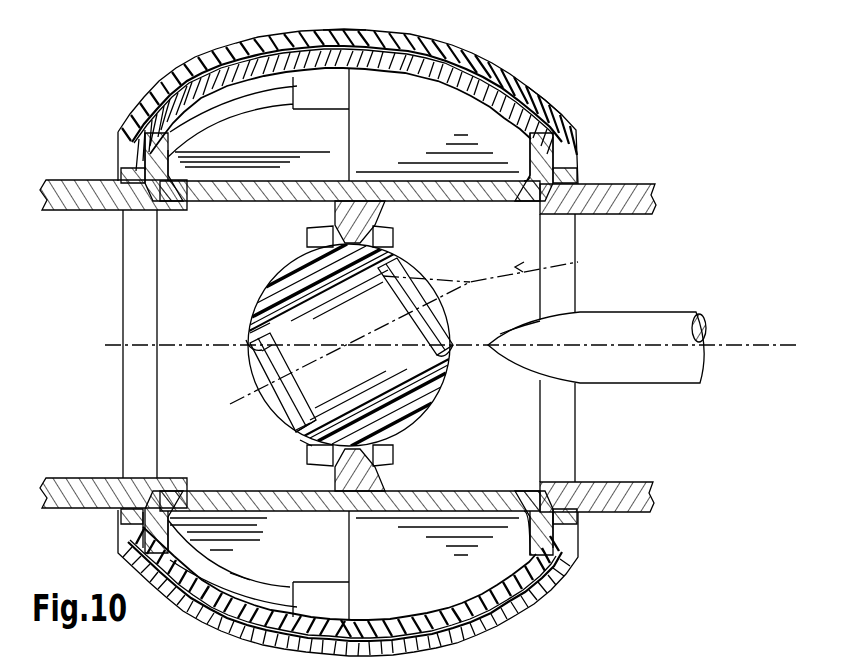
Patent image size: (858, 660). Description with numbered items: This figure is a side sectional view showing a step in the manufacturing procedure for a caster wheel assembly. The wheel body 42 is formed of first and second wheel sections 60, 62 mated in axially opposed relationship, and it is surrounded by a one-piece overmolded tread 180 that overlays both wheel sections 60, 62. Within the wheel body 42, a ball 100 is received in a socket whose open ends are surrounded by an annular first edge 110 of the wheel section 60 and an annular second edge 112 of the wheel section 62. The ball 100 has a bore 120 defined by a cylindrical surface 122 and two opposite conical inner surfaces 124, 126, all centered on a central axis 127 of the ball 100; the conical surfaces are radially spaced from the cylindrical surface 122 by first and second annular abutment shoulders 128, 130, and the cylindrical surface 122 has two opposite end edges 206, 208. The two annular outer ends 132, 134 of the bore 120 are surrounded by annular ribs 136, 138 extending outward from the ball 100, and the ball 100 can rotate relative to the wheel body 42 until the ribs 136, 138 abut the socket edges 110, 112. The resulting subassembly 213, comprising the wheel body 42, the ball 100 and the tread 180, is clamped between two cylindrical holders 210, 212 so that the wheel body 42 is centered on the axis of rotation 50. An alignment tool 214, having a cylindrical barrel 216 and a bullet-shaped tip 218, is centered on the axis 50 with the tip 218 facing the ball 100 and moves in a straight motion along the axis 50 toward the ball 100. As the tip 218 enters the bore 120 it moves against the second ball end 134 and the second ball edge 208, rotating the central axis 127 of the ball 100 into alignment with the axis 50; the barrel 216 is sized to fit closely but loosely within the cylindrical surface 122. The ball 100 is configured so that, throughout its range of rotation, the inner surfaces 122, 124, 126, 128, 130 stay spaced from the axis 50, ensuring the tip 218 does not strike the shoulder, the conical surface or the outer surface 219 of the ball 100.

The wheel body 42 is at (483, 62).
The axis of rotation 50 is at (764, 344).
The first wheel section 60 is at (312, 32).
The second wheel section 62 is at (419, 47).
The ball 100 is at (290, 273).
The first edge 110 is at (302, 462).
The second edge 112 is at (395, 262).
The bore 120 is at (276, 376).
The cylindrical surface 122 is at (300, 400).
The conical inner surface 124 is at (251, 338).
The conical inner surface 126 is at (463, 262).
The central axis 127 is at (426, 325).
The first annular abutment shoulder 128 is at (248, 352).
The second annular abutment shoulder 130 is at (456, 296).
The annular outer end 132 is at (302, 436).
The annular outer end 134 is at (458, 354).
The annular rib 136 is at (300, 440).
The annular rib 138 is at (390, 266).
The tread 180 is at (361, 31).
The end edge 206 is at (266, 351).
The end edge 208 is at (440, 336).
The cylindrical holder 210 is at (89, 179).
The cylindrical holder 212 is at (610, 183).
The subassembly 213 is at (574, 60).
The alignment tool 214 is at (661, 284).
The cylindrical barrel 216 is at (671, 310).
The bullet-shaped tip 218 is at (520, 318).
The outer surface 219 is at (413, 431).